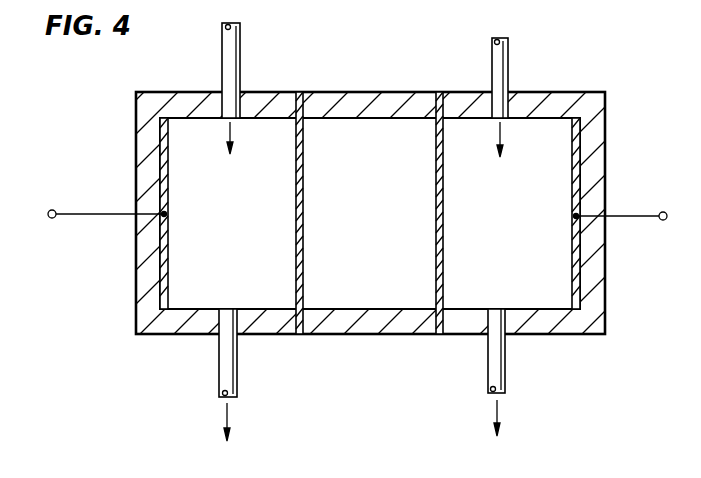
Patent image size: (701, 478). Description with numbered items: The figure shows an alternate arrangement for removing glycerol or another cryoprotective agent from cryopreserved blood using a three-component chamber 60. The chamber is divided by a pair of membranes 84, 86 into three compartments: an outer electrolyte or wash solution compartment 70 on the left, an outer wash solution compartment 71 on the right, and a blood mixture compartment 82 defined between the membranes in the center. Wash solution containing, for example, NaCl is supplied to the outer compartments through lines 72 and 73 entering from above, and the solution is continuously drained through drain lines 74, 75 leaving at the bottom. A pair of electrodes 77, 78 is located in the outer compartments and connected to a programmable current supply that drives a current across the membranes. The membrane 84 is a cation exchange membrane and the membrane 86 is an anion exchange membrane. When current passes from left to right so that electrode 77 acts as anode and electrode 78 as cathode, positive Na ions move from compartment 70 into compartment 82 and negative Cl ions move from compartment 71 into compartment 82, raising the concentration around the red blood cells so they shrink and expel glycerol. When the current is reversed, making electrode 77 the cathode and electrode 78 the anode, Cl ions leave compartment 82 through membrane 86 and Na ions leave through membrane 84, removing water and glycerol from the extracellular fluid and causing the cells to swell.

The three-component chamber 60 is at (463, 100).
The wash solution compartment 70 is at (185, 147).
The wash solution compartment 71 is at (555, 153).
The line 72 is at (227, 44).
The line 73 is at (500, 62).
The drain line 74 is at (227, 358).
The drain line 75 is at (495, 362).
The electrode 77 is at (56, 210).
The electrode 78 is at (658, 214).
The blood mixture compartment 82 is at (347, 135).
The cation exchange membrane 84 is at (303, 284).
The anion exchange membrane 86 is at (435, 283).